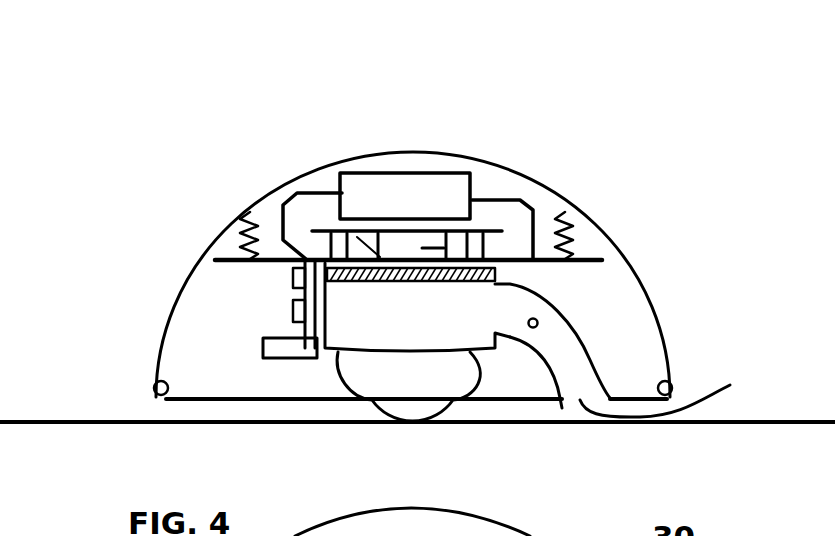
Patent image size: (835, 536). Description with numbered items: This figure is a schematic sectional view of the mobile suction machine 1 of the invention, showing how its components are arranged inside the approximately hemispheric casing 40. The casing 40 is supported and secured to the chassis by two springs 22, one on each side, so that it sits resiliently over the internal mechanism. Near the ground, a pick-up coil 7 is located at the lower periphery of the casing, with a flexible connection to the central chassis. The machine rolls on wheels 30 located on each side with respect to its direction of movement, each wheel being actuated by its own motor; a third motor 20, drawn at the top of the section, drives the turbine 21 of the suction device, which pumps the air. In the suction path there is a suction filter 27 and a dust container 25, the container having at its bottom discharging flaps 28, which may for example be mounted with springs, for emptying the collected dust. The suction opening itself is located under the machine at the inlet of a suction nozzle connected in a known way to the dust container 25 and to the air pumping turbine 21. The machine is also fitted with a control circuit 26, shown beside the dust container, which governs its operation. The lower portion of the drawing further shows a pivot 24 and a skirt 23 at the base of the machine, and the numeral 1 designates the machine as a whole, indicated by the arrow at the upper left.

The automatic floor dusting machine 1 is at (232, 182).
The pick-up coil 7 is at (156, 392).
The motor 20 is at (427, 200).
The turbine 21 is at (448, 240).
The springs 22 is at (240, 237).
The bumper skirt 23 is at (686, 390).
The pivot 24 is at (543, 320).
The dust container 25 is at (300, 257).
The control circuit 26 is at (292, 310).
The suction filter 27 is at (372, 318).
The discharging flaps 28 is at (480, 352).
The wheel 30 is at (405, 410).
The casing 40 is at (400, 152).